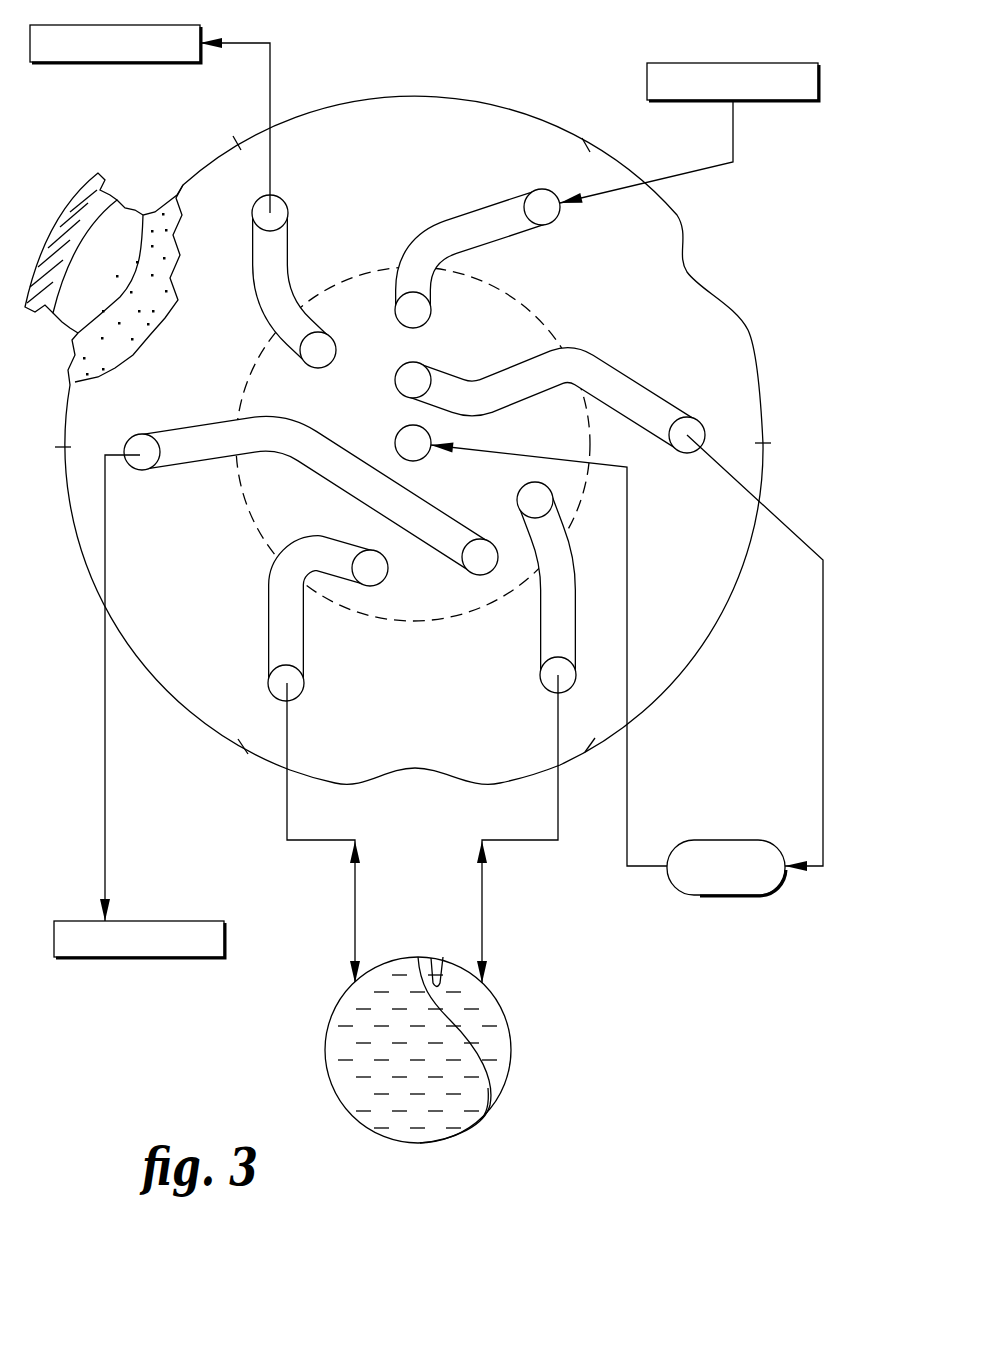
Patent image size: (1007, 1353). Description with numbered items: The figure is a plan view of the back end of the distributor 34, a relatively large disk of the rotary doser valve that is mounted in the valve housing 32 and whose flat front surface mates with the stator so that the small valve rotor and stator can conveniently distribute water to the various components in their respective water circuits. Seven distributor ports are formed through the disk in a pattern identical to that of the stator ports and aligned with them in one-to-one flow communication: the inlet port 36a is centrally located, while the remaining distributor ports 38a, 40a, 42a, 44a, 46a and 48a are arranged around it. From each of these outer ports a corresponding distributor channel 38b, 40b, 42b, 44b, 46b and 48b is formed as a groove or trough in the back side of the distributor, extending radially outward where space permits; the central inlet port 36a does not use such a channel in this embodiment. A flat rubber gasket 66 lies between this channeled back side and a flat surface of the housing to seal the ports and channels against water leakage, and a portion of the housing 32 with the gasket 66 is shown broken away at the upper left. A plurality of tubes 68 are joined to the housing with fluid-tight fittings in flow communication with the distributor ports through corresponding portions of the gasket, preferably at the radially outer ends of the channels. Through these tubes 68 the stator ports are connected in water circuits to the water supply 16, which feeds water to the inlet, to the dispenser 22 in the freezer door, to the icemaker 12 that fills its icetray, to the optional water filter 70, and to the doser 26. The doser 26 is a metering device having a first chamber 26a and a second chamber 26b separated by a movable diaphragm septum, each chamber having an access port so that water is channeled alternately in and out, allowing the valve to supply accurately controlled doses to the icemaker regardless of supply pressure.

The icemaker 12 is at (224, 950).
The water supply 16 is at (818, 92).
The dispenser 22 is at (200, 28).
The doser 26 is at (512, 1028).
The first chamber 26a is at (443, 978).
The second chamber 26b is at (343, 1085).
The housing 32 is at (73, 207).
The distributor 34 is at (752, 348).
The inlet port 36a is at (400, 434).
The distributor port 38a is at (440, 316).
The distributor channel 38b is at (475, 196).
The distributor port 40a is at (473, 592).
The distributor channel 40b is at (175, 478).
The distributor port 42a is at (330, 365).
The distributor channel 42b is at (290, 232).
The distributor port 44a is at (518, 494).
The distributor channel 44b is at (538, 667).
The distributor port 46a is at (377, 622).
The distributor channel 46b is at (267, 614).
The distributor port 48a is at (400, 362).
The distributor channel 48b is at (648, 387).
The gasket 66 is at (96, 354).
The tubes 68 is at (270, 76).
The water filter 70 is at (780, 888).